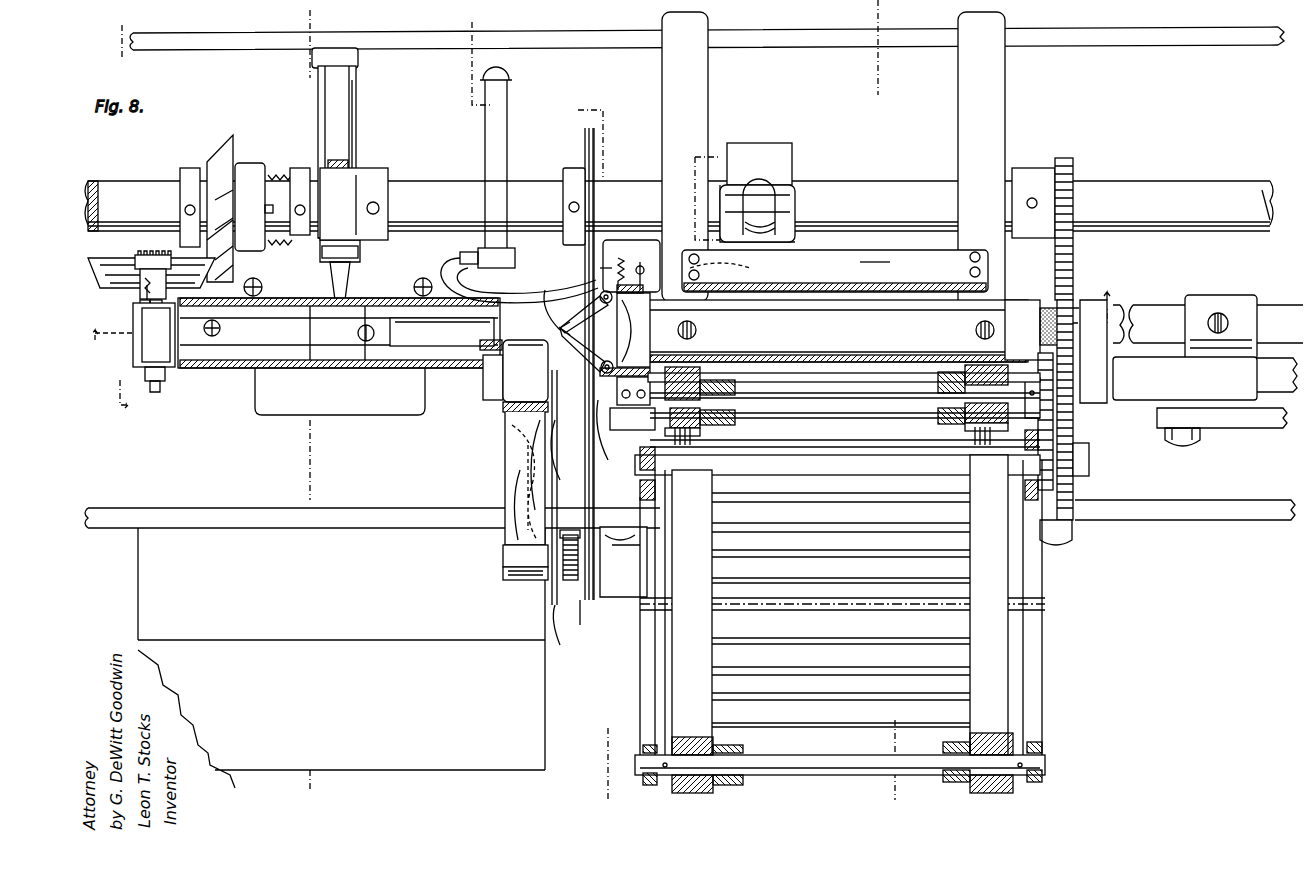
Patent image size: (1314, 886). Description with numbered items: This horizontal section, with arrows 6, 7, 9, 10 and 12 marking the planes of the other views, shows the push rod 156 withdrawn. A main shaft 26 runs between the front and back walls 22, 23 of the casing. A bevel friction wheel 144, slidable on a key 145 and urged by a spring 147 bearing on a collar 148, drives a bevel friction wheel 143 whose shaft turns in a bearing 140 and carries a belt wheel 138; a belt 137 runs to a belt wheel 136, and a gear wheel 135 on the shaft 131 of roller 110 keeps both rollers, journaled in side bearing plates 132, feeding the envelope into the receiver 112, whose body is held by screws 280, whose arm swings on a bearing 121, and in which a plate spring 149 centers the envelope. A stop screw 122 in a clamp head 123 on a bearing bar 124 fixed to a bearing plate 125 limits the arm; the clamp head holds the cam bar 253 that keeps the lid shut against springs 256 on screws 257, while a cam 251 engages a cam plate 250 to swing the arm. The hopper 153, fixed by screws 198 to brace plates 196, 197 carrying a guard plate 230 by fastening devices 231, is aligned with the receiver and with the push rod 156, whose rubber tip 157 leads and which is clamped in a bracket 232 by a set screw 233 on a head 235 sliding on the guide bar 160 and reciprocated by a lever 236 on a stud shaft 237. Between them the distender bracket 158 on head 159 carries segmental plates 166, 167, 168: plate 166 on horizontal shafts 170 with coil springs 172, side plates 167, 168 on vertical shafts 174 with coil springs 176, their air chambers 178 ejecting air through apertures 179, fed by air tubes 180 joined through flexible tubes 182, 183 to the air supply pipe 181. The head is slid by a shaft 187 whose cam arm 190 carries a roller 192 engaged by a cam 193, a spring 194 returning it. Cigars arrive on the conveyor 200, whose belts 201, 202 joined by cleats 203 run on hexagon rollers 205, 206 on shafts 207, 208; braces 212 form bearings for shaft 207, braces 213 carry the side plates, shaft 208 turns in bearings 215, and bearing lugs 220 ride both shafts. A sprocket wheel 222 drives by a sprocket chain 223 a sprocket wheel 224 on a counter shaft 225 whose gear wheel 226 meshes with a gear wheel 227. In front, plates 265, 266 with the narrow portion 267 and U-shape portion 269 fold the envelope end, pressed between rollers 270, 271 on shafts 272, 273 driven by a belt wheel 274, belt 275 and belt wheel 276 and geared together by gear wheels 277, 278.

The section line 6 is at (122, 22).
The section line 7 is at (310, 22).
The section line 9 is at (472, 22).
The direction arrow 10 is at (604, 306).
The section line 12 is at (878, 8).
The front wall 22 is at (1180, 518).
The back wall 23 is at (425, 32).
The main shaft 26 is at (150, 185).
The roller 110 is at (132, 345).
The receiver 112 is at (232, 368).
The bearing 121 is at (380, 410).
The stop screw 122 is at (350, 280).
The clamp head 123 is at (360, 210).
The bearing bar 124 is at (356, 124).
The bearing plate 125 is at (358, 58).
The shaft 131 is at (157, 390).
The side bearing plates 132 is at (147, 308).
The gear wheel 135 is at (153, 268).
The belt wheel 136 is at (173, 265).
The belt 137 is at (138, 302).
The belt wheel 138 is at (132, 299).
The bearing 140 is at (140, 343).
The bevel friction wheel 143 is at (110, 262).
The bevel friction wheel 144 is at (228, 148).
The key 145 is at (269, 202).
The spring 147 is at (278, 180).
The collar 148 is at (302, 172).
The plate spring 149 is at (448, 346).
The hopper 153 is at (1020, 272).
The push rod 156 is at (1150, 305).
The tip 157 is at (1046, 306).
The bracket 158 is at (640, 342).
The head 159 is at (578, 410).
The guide bar 160 is at (490, 395).
The segmental plate 166 is at (596, 326).
The side segmental plate 167 is at (580, 350).
The side segmental plate 168 is at (578, 322).
The horizontal shafts 170 is at (621, 265).
The coil springs 172 is at (642, 266).
The vertical shafts 174 is at (602, 445).
The coil springs 176 is at (595, 288).
The air chamber 178 is at (560, 310).
The aperture 179 is at (555, 326).
The air tube 180 is at (565, 292).
The air supply pipe 181 is at (507, 90).
The flexible tube 182 is at (450, 262).
The flexible tube 183 is at (510, 258).
The shaft 187 is at (628, 240).
The cam arm 190 is at (652, 234).
The roller 192 is at (767, 183).
The cam 193 is at (782, 152).
The spring 194 is at (835, 271).
The brace plate 196 is at (700, 80).
The brace plate 197 is at (962, 108).
The screws 198 is at (694, 336).
The conveyor 200 is at (652, 712).
The belt 201 is at (712, 567).
The belt 202 is at (970, 567).
The cleats 203 is at (822, 548).
The hexagon roller 205 is at (1016, 776).
The hexagon roller 206 is at (720, 428).
The shaft 207 is at (1046, 763).
The shaft 208 is at (870, 400).
The braces 212 is at (640, 642).
The braces 213 is at (645, 486).
The bearings 215 is at (705, 437).
The bearing lugs 220 is at (750, 430).
The sprocket wheel 222 is at (1070, 164).
The sprocket chain 223 is at (1072, 274).
The sprocket wheel 224 is at (1073, 485).
The counter shaft 225 is at (1090, 460).
The gear wheel 226 is at (1051, 540).
The gear wheel 227 is at (1040, 405).
The guard plate 230 is at (872, 268).
The fastening devices 231 is at (970, 264).
The bracket 232 is at (1220, 296).
The set screw 233 is at (1228, 316).
The head 235 is at (1140, 400).
The lever 236 is at (1222, 430).
The stud shaft 237 is at (1182, 448).
The cam plate 250 is at (362, 258).
The cam 251 is at (365, 168).
The cam bar 253 is at (350, 165).
The springs 256 is at (262, 286).
The screws 257 is at (255, 280).
The plate 265 is at (505, 380).
The plate 266 is at (520, 415).
The narrow portion 267 is at (510, 480).
The U-shape portion 269 is at (502, 507).
The roller 270 is at (503, 552).
The roller 271 is at (503, 575).
The shaft 272 is at (592, 555).
The shaft 273 is at (572, 585).
The belt wheel 274 is at (598, 555).
The belt 275 is at (590, 154).
The belt wheel 276 is at (585, 134).
The gear wheel 277 is at (570, 535).
The gear wheel 278 is at (562, 610).
The screws 280 is at (220, 328).